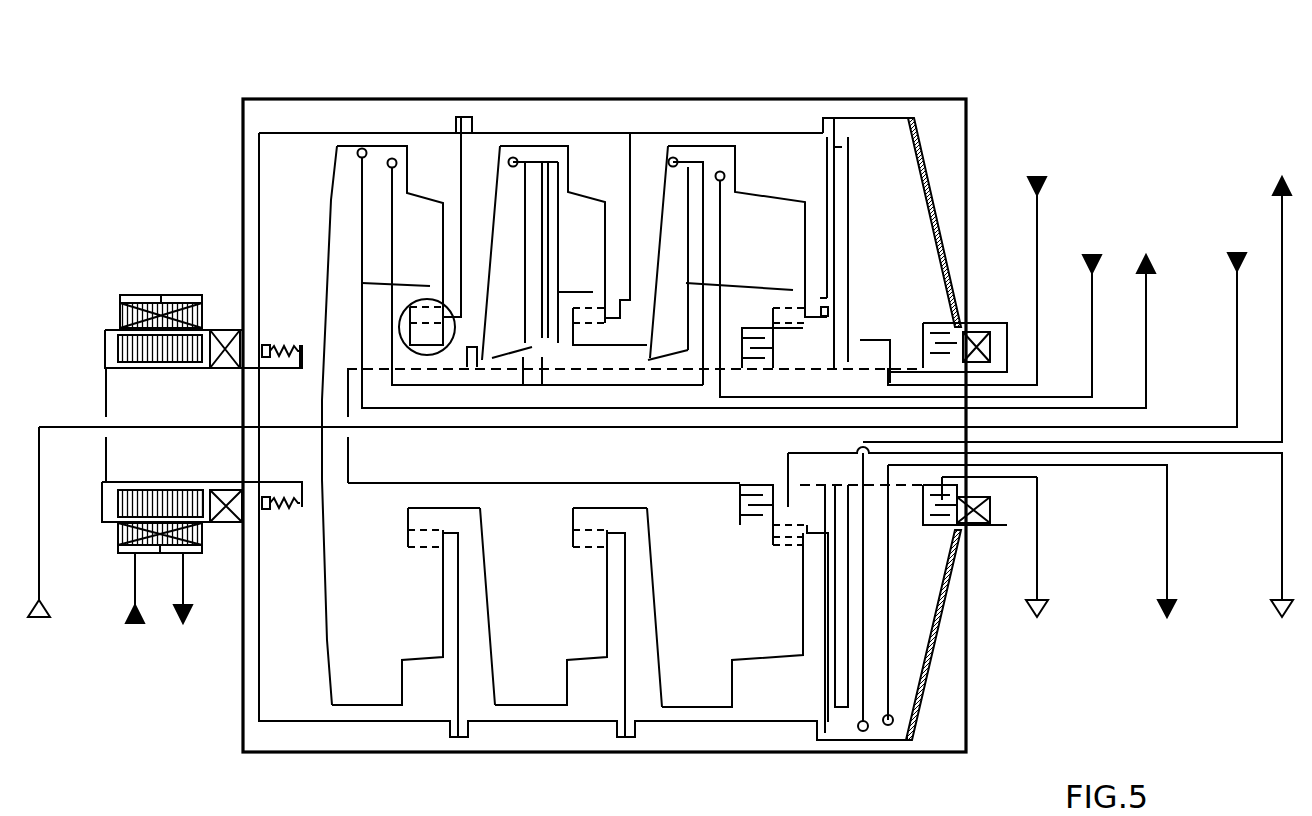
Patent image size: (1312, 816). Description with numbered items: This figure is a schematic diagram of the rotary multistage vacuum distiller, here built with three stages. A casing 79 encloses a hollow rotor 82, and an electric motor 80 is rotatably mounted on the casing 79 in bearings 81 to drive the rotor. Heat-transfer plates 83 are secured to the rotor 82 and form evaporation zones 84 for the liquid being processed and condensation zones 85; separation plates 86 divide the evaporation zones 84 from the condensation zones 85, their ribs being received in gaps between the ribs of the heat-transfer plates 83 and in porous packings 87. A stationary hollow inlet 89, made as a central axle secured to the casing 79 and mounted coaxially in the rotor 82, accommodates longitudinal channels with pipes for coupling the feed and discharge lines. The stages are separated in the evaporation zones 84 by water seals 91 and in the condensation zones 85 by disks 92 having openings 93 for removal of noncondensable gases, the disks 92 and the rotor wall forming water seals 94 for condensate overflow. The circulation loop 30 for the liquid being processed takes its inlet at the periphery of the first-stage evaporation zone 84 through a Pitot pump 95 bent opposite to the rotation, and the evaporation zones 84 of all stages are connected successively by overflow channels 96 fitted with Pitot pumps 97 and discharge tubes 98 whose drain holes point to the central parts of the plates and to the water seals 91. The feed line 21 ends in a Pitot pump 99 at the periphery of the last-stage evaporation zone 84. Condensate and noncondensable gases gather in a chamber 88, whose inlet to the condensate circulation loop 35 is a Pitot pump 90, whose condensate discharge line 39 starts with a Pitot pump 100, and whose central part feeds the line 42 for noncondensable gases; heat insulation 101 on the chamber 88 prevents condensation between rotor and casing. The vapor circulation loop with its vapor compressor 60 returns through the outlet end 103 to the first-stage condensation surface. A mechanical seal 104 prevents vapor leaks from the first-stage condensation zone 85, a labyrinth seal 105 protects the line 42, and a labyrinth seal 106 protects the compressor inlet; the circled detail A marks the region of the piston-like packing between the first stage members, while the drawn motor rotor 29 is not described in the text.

The casing 79 is at (243, 157).
The hollow rotor 82 is at (279, 130).
The condensation zones 85 is at (300, 138).
The water seals 94 is at (468, 117).
The disks 92 is at (630, 183).
The chamber for collecting condensate and noncondensable gases 88 is at (882, 133).
The heat insulation 101 is at (942, 633).
The heat-transfer plates 83 is at (324, 633).
The evaporation zones 84 is at (347, 677).
The Pitot pump 95 is at (363, 148).
The Pitot pumps 97 is at (394, 158).
The Pitot pump 99 is at (726, 176).
The discharge tubes 98 is at (580, 290).
The detail A is at (406, 298).
The overflow channels 96 is at (560, 388).
The porous packings 87 is at (792, 307).
The openings 93 is at (824, 318).
The separation plates 86 is at (436, 508).
The water seals 91 is at (473, 506).
The stationary hollow inlet 89 is at (348, 392).
The outlet end 103 is at (302, 428).
The labyrinth seal 106 is at (750, 530).
The labyrinth seal 105 is at (928, 525).
The bearings 81 is at (226, 518).
The condensate circulation loop 35 is at (1040, 232).
The feed line 21 is at (1095, 315).
The circulation loop 30 is at (1236, 316).
The vapor compressor 60 is at (39, 585).
The condensate discharge line 39 is at (1170, 585).
The line for removal of noncondensable gases 42 is at (1040, 585).
The Pitot pump 90 is at (863, 732).
The Pitot pump 100 is at (890, 727).
The rotor 29 is at (145, 298).
The electric motor 80 is at (122, 347).
The mechanical seal 104 is at (287, 345).